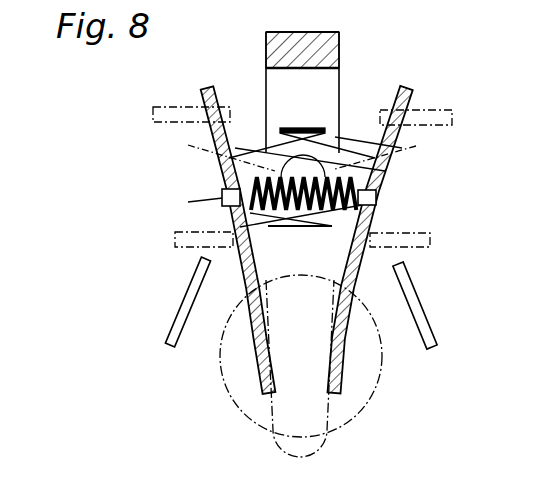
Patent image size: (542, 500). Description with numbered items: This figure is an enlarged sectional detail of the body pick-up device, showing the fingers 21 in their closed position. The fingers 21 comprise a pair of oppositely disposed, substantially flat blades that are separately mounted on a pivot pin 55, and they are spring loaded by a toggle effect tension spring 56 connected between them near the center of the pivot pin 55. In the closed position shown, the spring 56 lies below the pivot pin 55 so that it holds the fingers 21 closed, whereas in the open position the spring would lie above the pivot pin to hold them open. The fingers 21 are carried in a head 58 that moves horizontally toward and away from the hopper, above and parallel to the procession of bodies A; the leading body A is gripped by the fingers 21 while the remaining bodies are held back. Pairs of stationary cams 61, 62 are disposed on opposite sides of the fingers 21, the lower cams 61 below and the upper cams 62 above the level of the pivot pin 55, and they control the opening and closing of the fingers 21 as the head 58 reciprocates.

The fingers 21 is at (202, 88).
The pivot pin 55 is at (308, 160).
The toggle effect tension spring 56 is at (372, 162).
The head 58 is at (335, 48).
The lower cams 61 is at (175, 242).
The upper cams 62 is at (153, 117).
The bodies A is at (373, 397).